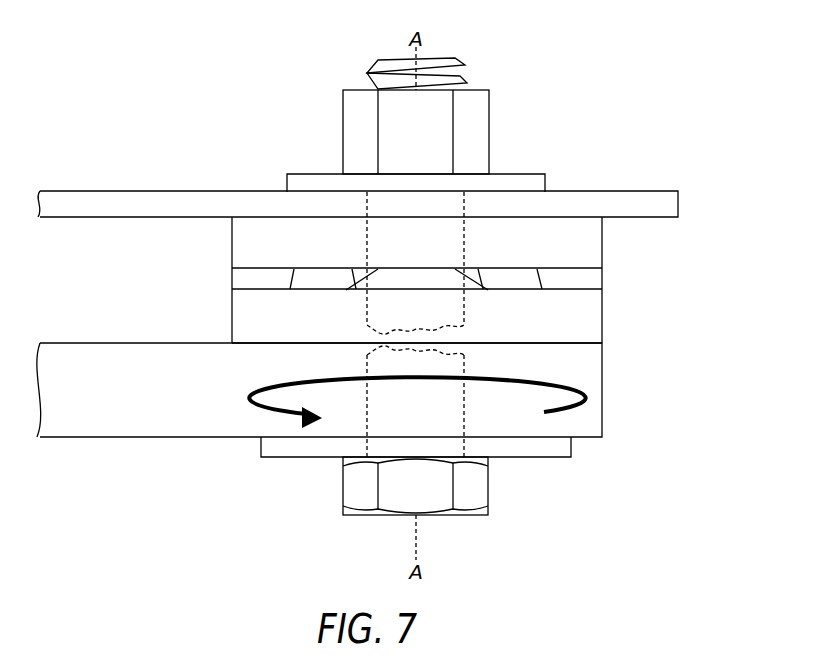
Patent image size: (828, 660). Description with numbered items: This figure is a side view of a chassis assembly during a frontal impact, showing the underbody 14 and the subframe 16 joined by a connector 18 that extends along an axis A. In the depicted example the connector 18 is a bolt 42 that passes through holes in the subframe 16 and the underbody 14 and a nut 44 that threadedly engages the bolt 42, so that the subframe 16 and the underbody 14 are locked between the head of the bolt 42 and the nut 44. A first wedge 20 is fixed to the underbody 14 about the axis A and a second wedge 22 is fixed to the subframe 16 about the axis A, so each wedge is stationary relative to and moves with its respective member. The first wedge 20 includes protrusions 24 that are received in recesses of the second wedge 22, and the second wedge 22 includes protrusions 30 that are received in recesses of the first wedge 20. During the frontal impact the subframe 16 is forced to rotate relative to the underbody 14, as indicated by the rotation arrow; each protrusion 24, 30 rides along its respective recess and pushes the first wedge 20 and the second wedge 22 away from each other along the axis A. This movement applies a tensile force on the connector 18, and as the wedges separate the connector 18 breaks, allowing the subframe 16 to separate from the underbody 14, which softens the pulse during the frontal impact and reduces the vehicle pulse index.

The underbody 14 is at (680, 193).
The subframe 16 is at (603, 423).
The connector 18 is at (350, 526).
The first wedge 20 is at (212, 241).
The second wedge 22 is at (212, 305).
The protrusion 24 is at (238, 281).
The protrusion 30 is at (317, 276).
The bolt 42 is at (367, 417).
The nut 44 is at (352, 125).